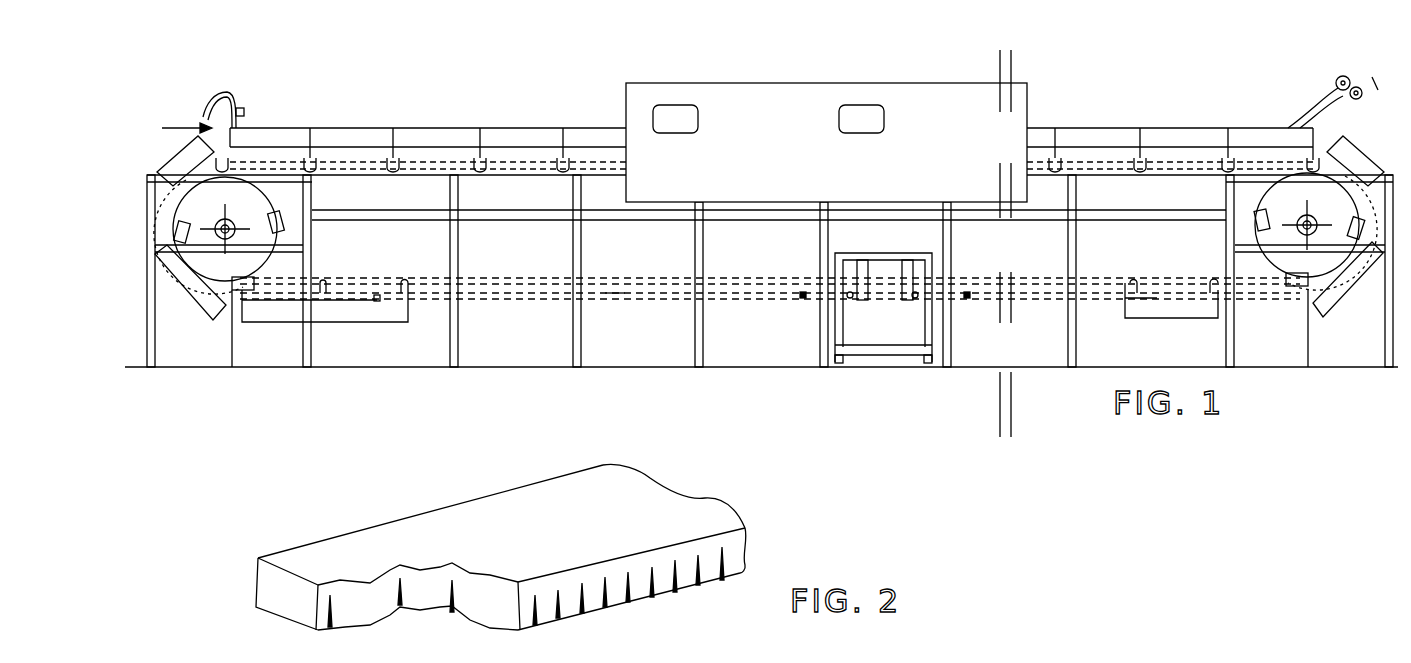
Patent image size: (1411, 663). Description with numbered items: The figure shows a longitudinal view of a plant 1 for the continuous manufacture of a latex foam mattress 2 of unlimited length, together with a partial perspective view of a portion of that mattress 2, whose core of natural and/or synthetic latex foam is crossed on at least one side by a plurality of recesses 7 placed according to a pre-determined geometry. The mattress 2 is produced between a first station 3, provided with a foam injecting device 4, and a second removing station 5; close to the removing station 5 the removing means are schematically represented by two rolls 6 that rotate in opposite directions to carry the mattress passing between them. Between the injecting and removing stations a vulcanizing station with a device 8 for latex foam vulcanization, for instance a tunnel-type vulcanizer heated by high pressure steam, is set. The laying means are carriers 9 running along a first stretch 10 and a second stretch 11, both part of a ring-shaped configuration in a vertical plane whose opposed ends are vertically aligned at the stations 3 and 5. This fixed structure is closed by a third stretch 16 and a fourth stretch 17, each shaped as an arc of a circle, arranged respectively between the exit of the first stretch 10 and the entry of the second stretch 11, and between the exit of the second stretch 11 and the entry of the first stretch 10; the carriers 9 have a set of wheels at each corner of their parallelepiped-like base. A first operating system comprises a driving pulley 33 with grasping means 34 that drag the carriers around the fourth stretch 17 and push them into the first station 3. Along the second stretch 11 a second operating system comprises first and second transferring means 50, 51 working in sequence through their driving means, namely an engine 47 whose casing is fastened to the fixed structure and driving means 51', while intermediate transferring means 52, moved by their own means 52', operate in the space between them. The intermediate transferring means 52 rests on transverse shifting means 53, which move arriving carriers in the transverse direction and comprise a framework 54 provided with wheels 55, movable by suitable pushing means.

In FIG. 1, the plant 1 is at (510, 379).
In FIG. 2, the latex foam mattress 2 is at (660, 519).
In FIG. 1, the first station 3 is at (174, 133).
In FIG. 1, the foam injecting device 4 is at (240, 97).
In FIG. 1, the second removing station 5 is at (1326, 130).
In FIG. 1, the rolls 6 is at (1333, 82).
In FIG. 2, the recesses 7 is at (403, 597).
In FIG. 1, the device for latex foam vulcanization 8 is at (1020, 98).
In FIG. 1, the carriers 9 is at (417, 135).
In FIG. 1, the first stretch 10 is at (550, 176).
In FIG. 1, the second stretch 11 is at (739, 271).
In FIG. 1, the third stretch shaped as an arc of a circle 16 is at (1348, 206).
In FIG. 1, the fourth stretch shaped as an arc of a circle 17 is at (187, 218).
In FIG. 1, the driving pulley 33 is at (253, 265).
In FIG. 1, the grasping means 34 is at (281, 217).
In FIG. 1, the engine 47 is at (967, 300).
In FIG. 1, the first transferring means 50 is at (1033, 297).
In FIG. 1, the second transferring means 51 is at (627, 320).
In FIG. 1, the driving means 51' is at (404, 326).
In FIG. 1, the intermediate transferring means 52 is at (885, 295).
In FIG. 1, the own means 52' is at (845, 318).
In FIG. 1, the transverse shifting means 53 is at (865, 330).
In FIG. 1, the framework 54 is at (913, 260).
In FIG. 1, the wheels 55 is at (922, 361).